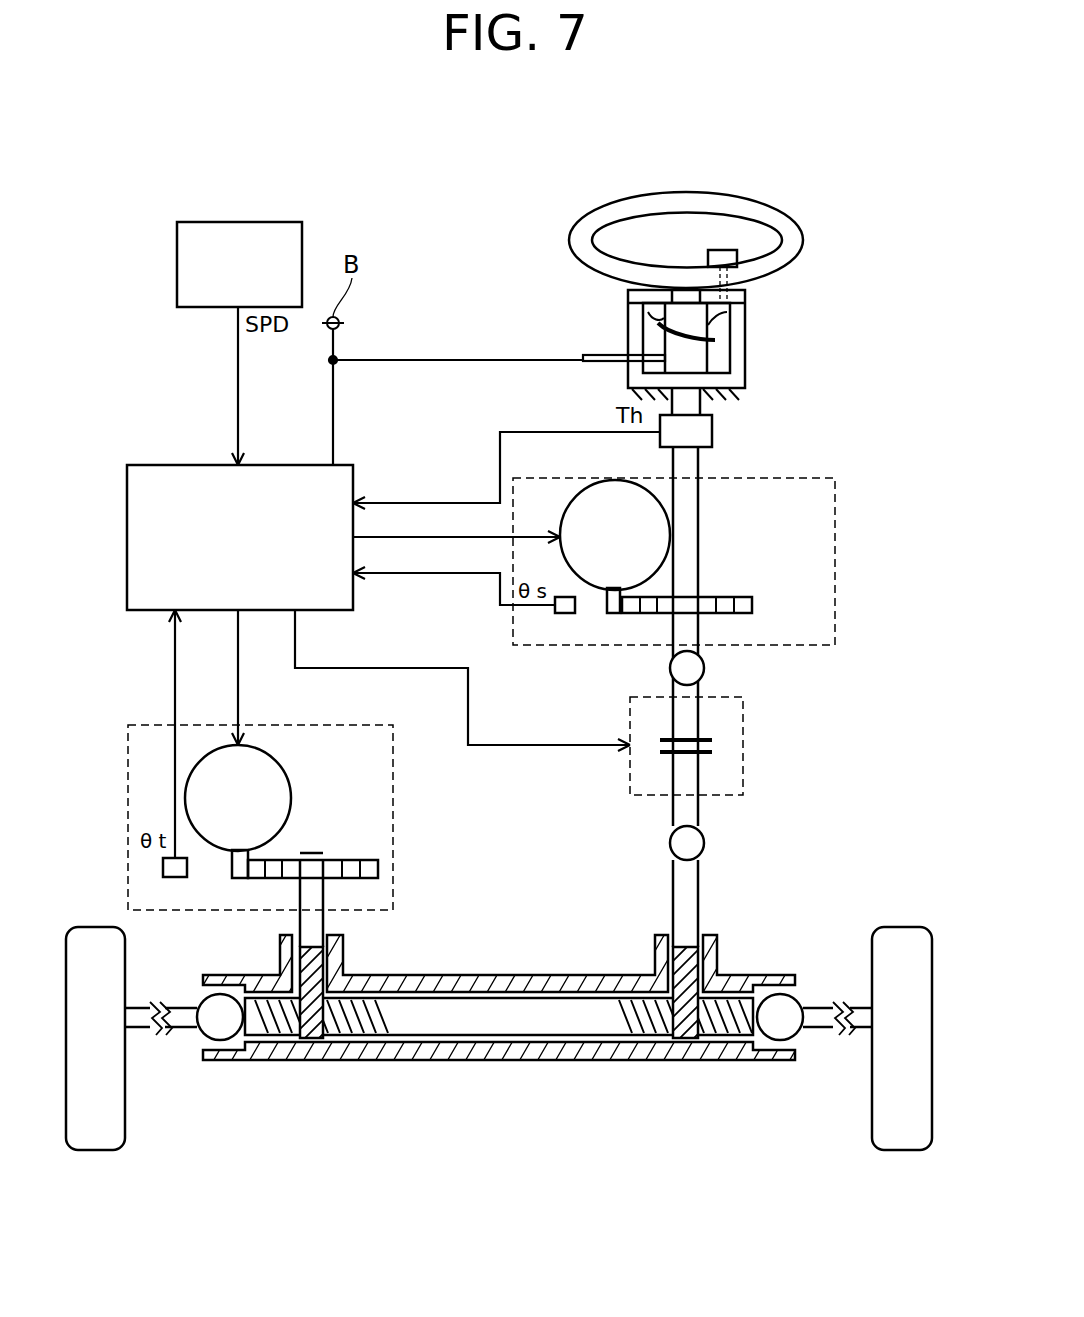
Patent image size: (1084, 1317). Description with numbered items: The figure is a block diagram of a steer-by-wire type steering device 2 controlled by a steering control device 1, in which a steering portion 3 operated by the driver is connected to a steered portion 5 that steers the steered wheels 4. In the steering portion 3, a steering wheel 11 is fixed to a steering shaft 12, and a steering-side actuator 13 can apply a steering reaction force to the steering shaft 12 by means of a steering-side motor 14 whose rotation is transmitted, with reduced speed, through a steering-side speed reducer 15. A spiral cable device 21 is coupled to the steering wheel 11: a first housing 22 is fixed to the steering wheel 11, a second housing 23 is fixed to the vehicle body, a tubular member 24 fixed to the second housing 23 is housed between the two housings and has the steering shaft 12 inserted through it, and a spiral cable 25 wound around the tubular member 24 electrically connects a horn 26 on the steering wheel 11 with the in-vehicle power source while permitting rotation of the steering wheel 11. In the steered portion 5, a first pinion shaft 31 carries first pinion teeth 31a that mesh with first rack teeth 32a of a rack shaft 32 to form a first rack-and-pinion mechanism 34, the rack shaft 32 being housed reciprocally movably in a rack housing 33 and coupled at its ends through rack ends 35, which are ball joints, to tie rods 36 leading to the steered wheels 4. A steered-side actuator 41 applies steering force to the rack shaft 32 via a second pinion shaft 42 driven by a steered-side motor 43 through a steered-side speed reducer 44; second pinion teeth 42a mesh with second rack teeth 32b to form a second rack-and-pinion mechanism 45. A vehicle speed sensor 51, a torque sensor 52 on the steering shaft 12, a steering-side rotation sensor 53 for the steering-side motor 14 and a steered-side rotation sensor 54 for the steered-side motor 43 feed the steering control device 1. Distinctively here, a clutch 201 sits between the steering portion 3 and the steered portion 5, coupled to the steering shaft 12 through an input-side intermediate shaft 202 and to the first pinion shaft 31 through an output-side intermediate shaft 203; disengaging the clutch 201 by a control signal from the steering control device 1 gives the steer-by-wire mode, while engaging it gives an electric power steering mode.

The steering control device 1 is at (160, 465).
The steering device 2 is at (143, 222).
The steering portion 3 is at (818, 652).
The steered wheels 4 is at (95, 1150).
The steered portion 5 is at (803, 823).
The steering wheel 11 is at (748, 198).
The steering shaft 12 is at (703, 468).
The steering-side actuator 13 is at (818, 474).
The steering-side motor 14 is at (572, 500).
The steering-side speed reducer 15 is at (637, 618).
The spiral cable device 21 is at (812, 337).
The first housing 22 is at (747, 293).
The second housing 23 is at (747, 357).
The tubular member 24 is at (632, 295).
The spiral cable 25 is at (642, 345).
The horn 26 is at (718, 240).
The first pinion shaft 31 is at (700, 868).
The first pinion teeth 31a is at (683, 962).
The rack shaft 32 is at (477, 1012).
The first rack teeth 32a is at (635, 1017).
The second rack teeth 32b is at (357, 1023).
The rack housing 33 is at (563, 975).
The first rack-and-pinion mechanism 34 is at (702, 1037).
The rack ends 35 is at (223, 1027).
The tie rods 36 is at (180, 1028).
The steered-side actuator 41 is at (357, 725).
The second pinion shaft 42 is at (325, 917).
The second pinion teeth 42a is at (313, 978).
The steered-side motor 43 is at (283, 762).
The steered-side speed reducer 44 is at (238, 882).
The second rack-and-pinion mechanism 45 is at (295, 1042).
The vehicle speed sensor 51 is at (262, 222).
The torque sensor 52 is at (712, 433).
The steering-side rotation sensor 53 is at (565, 615).
The steered-side rotation sensor 54 is at (175, 878).
The clutch 201 is at (743, 745).
The input-side intermediate shaft 202 is at (700, 687).
The output-side intermediate shaft 203 is at (700, 810).